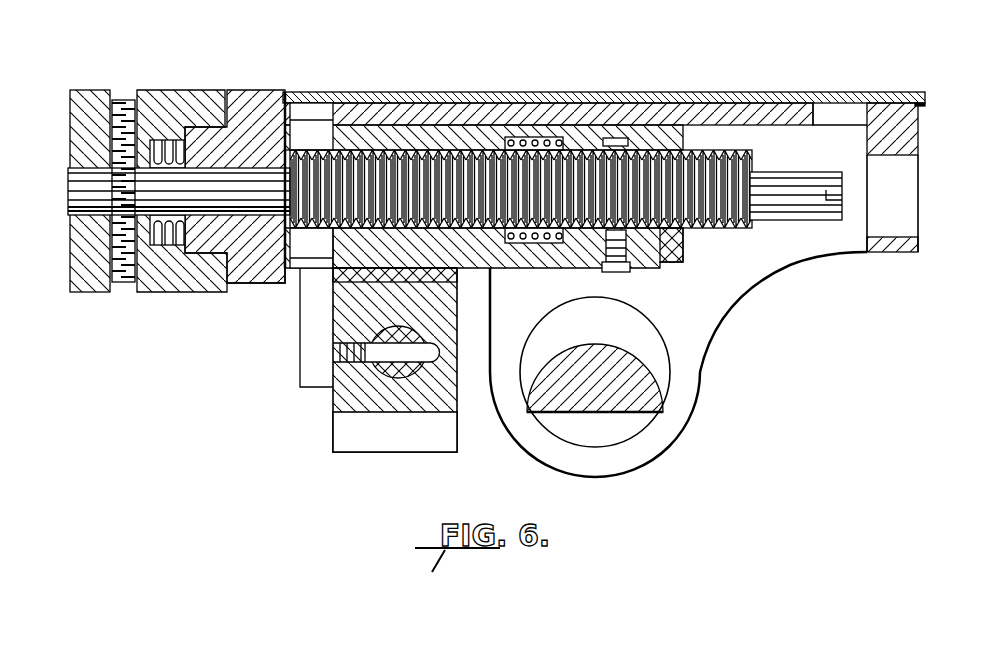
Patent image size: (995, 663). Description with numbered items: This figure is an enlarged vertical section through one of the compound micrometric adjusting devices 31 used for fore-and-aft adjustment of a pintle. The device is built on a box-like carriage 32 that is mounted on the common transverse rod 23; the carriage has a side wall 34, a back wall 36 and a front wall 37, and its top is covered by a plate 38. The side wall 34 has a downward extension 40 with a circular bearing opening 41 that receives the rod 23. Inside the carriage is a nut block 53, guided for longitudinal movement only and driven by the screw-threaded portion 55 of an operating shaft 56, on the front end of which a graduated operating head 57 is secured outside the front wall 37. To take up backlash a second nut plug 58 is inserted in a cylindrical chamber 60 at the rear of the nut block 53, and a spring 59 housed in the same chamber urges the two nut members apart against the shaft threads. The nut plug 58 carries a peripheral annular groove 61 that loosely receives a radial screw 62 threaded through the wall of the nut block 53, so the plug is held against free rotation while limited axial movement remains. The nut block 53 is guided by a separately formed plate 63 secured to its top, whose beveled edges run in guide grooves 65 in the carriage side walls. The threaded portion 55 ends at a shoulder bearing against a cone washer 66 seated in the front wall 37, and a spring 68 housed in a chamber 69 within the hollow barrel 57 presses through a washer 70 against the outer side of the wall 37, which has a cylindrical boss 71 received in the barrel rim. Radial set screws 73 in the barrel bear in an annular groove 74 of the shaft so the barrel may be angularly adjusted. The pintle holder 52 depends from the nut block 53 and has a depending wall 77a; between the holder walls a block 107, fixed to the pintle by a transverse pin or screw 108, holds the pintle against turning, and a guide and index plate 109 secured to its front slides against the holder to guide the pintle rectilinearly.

The transverse rod 23 is at (540, 397).
The compound micrometric device 31 is at (525, 100).
The carriage 32 is at (802, 250).
The side wall 34 is at (510, 204).
The back wall 36 is at (900, 140).
The front wall 37 is at (255, 280).
The plate 38 is at (740, 94).
The downward extension 40 is at (624, 372).
The circular bearing opening 41 is at (632, 437).
The pintle holder 52 is at (333, 282).
The nut block 53 is at (470, 270).
The screw-threaded portion 55 is at (735, 165).
The operating shaft 56 is at (70, 185).
The graduated operating head 57 is at (162, 232).
The nut plug 58 is at (685, 250).
The spring 59 is at (540, 250).
The cylindrical chamber 60 is at (520, 250).
The peripheral annular groove 61 is at (620, 138).
The radial screw 62 is at (625, 268).
The plate 63 is at (440, 112).
The guide grooves 65 is at (842, 115).
The cone washer 66 is at (287, 153).
The spring 68 is at (135, 280).
The chamber 69 is at (160, 140).
The washer 70 is at (172, 245).
The cylindrical boss 71 is at (235, 128).
The radial set screws 73 is at (120, 100).
The annular groove 74 is at (72, 207).
The depending wall 77a is at (395, 448).
The block 107 is at (333, 405).
The transverse pin or screw 108 is at (335, 357).
The guide and index plate 109 is at (302, 388).